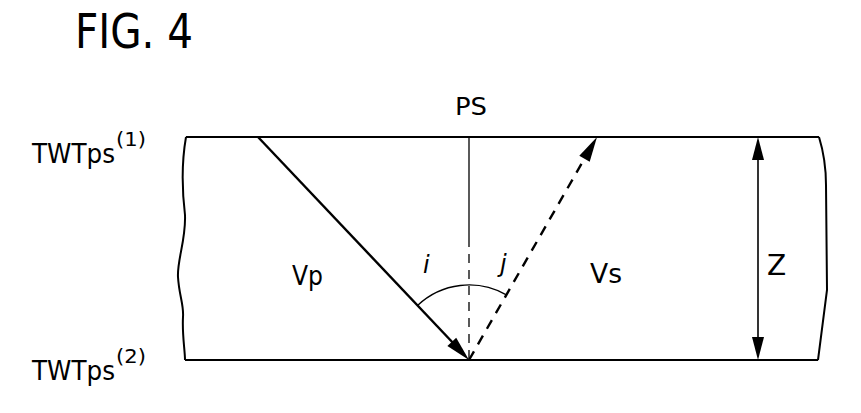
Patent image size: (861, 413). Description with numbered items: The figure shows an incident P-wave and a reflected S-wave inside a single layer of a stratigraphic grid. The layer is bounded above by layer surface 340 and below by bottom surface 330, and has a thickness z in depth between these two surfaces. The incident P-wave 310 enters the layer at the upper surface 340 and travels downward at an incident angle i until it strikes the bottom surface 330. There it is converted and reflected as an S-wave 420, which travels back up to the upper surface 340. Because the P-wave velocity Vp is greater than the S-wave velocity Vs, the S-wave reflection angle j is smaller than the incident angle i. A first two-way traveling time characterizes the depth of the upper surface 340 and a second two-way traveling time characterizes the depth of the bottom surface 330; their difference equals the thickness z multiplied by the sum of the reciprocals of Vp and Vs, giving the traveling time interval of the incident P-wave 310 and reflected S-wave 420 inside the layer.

The incident P-wave 310 is at (315, 197).
The reflected S-wave 420 is at (556, 208).
The layer surface 340 is at (681, 137).
The bottom surface 330 is at (698, 360).